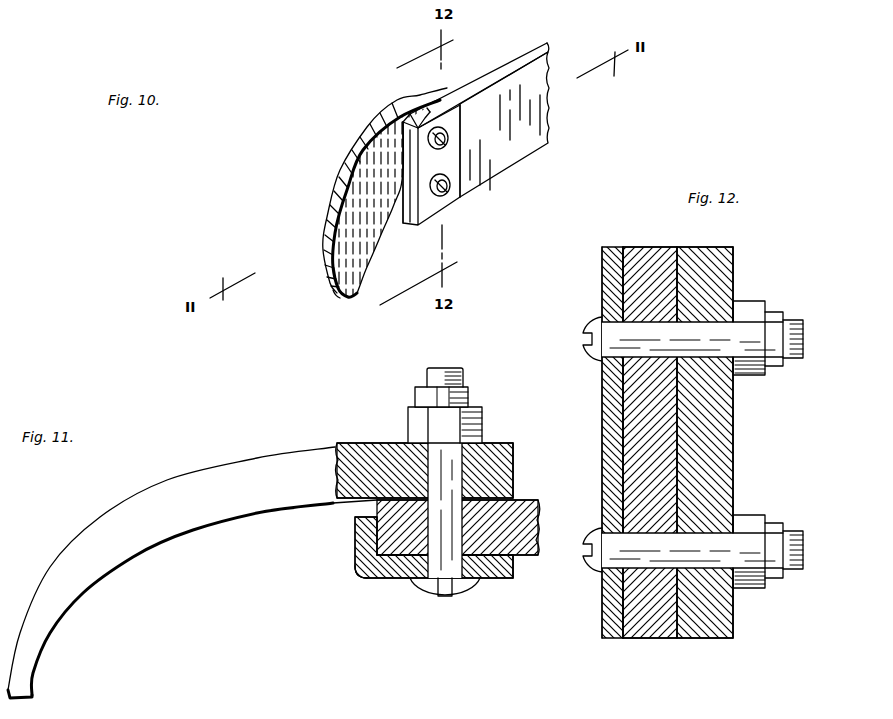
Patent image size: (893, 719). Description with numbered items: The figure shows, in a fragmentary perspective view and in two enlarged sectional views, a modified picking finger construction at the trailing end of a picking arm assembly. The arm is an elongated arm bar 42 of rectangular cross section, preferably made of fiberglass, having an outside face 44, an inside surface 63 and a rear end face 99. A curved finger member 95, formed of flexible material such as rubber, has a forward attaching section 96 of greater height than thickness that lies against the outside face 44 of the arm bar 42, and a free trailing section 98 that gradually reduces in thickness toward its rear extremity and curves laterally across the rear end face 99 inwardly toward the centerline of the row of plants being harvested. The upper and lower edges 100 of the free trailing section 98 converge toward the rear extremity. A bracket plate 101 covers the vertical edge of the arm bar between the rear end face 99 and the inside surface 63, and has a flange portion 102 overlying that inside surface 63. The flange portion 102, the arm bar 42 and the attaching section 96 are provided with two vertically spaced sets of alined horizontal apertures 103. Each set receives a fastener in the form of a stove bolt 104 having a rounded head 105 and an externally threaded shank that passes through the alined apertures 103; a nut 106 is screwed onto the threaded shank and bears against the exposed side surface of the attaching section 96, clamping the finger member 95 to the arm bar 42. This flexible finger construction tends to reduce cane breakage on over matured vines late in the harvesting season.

In FIG. 10, the arm bar 42 is at (497, 101).
In FIG. 11, the arm bar 42 is at (546, 508).
In FIG. 12, the arm bar 42 is at (647, 252).
In FIG. 10, the outside face 44 is at (507, 48).
In FIG. 11, the outside face 44 is at (528, 490).
In FIG. 12, the outside face 44 is at (673, 260).
In FIG. 10, the inside surface 63 is at (538, 144).
In FIG. 11, the inside surface 63 is at (513, 565).
In FIG. 12, the inside surface 63 is at (628, 260).
In FIG. 10, the curved finger member 95 is at (424, 182).
In FIG. 11, the curved finger member 95 is at (192, 559).
In FIG. 12, the curved finger member 95 is at (670, 415).
In FIG. 10, the forward attaching section 96 is at (416, 92).
In FIG. 11, the forward attaching section 96 is at (507, 443).
In FIG. 12, the forward attaching section 96 is at (717, 433).
In FIG. 10, the free trailing section 98 is at (334, 293).
In FIG. 11, the free trailing section 98 is at (22, 682).
In FIG. 10, the rear end face 99 is at (449, 87).
In FIG. 11, the rear end face 99 is at (345, 511).
In FIG. 10, the upper and lower edges 100 is at (362, 148).
In FIG. 11, the upper and lower edges 100 is at (196, 510).
In FIG. 10, the bracket plate 101 is at (400, 192).
In FIG. 11, the bracket plate 101 is at (360, 567).
In FIG. 10, the flange portion 102 is at (450, 165).
In FIG. 11, the flange portion 102 is at (429, 575).
In FIG. 12, the flange portion 102 is at (603, 260).
In FIG. 11, the alined horizontal apertures 103 is at (442, 488).
In FIG. 12, the alined horizontal apertures 103 is at (700, 318).
In FIG. 11, the stove bolt 104 is at (456, 369).
In FIG. 12, the stove bolt 104 is at (795, 318).
In FIG. 10, the rounded head 105 is at (449, 136).
In FIG. 11, the rounded head 105 is at (425, 585).
In FIG. 12, the rounded head 105 is at (597, 307).
In FIG. 11, the nut 106 is at (470, 393).
In FIG. 12, the nut 106 is at (757, 300).